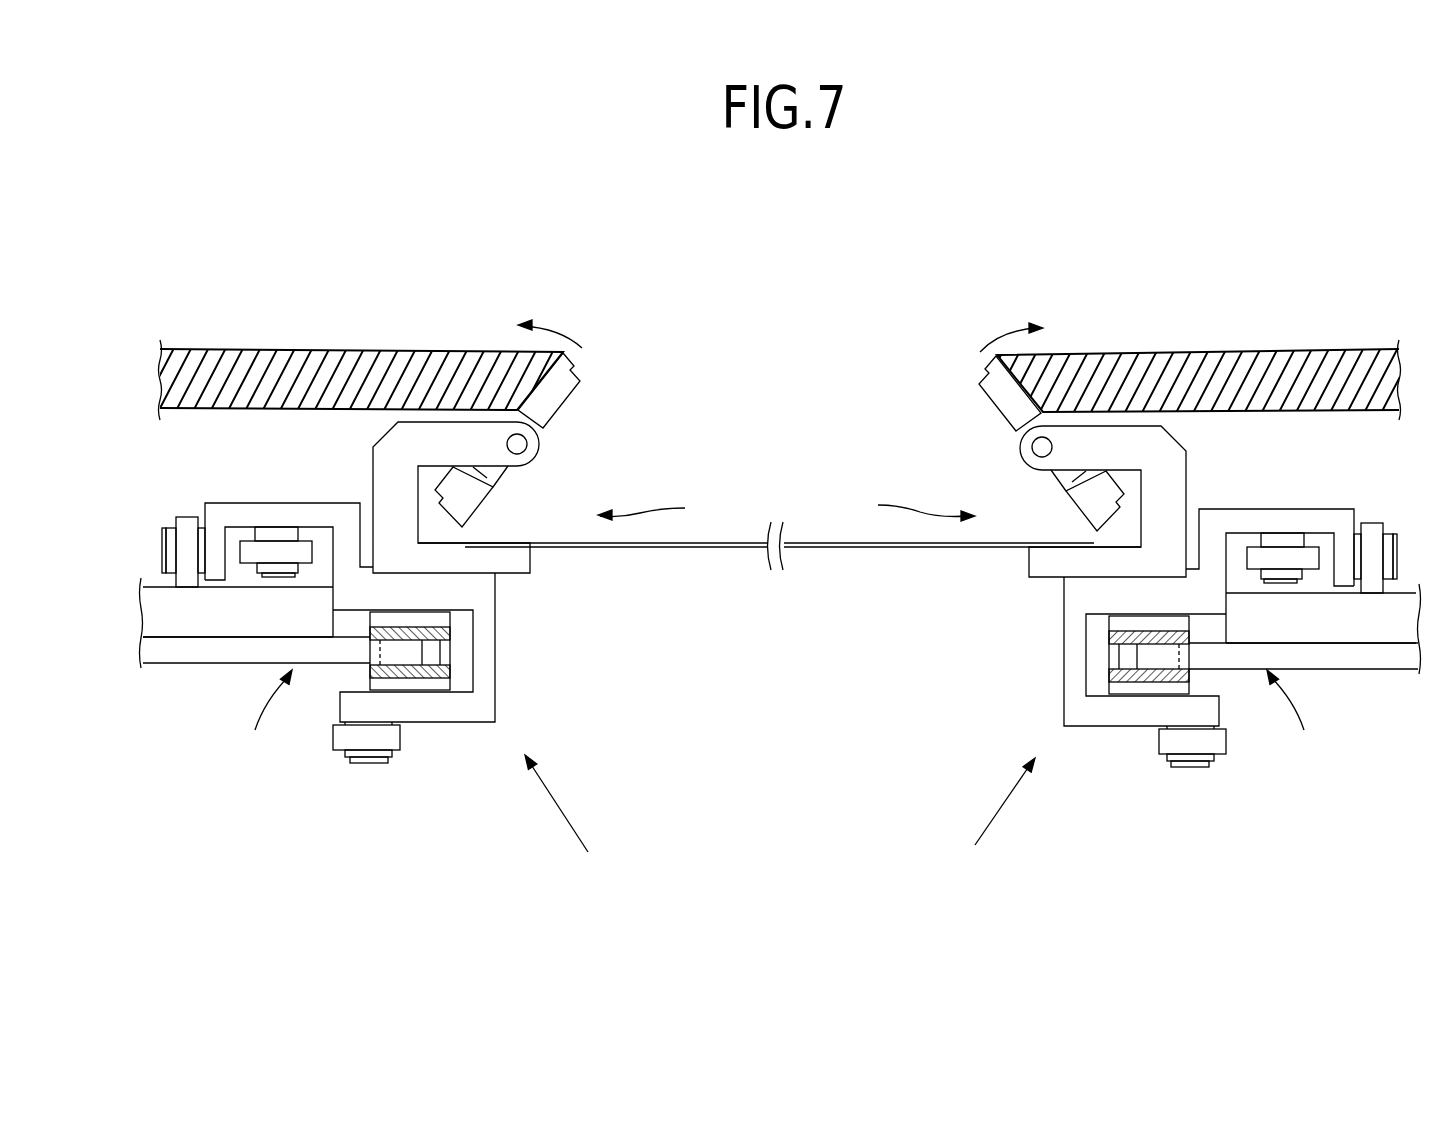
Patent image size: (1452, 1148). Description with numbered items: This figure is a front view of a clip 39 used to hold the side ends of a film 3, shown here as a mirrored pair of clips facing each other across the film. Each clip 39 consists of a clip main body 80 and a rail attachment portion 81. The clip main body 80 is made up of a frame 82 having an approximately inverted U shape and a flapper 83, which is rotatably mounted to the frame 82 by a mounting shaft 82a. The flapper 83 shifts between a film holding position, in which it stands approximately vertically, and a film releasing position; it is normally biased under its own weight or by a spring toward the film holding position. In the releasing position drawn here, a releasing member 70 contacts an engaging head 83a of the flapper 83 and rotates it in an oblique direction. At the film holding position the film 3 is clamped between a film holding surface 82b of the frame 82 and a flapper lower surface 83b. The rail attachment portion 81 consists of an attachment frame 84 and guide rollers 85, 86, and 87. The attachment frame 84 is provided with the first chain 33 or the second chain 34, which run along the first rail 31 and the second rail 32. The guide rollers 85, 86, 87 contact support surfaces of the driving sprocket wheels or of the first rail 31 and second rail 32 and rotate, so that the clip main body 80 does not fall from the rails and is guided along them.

The film 3 is at (755, 543).
The first rail 31 is at (1370, 662).
The second rail 32 is at (183, 652).
The first chain 33 is at (1125, 652).
The second chain 34 is at (432, 655).
The clip 39 is at (780, 821).
The releasing member 70 is at (325, 366).
The clip main body 80 is at (786, 506).
The rail attachment portion 81 is at (779, 637).
The frame 82 is at (392, 441).
The mounting shaft 82a is at (528, 446).
The film holding surface 82b is at (448, 543).
The flapper 83 is at (498, 484).
The engaging head 83a is at (583, 373).
The flapper lower surface 83b is at (452, 518).
The attachment frame 84 is at (487, 678).
The guide roller 85 is at (392, 738).
The guide roller 86 is at (190, 515).
The guide roller 87 is at (278, 550).